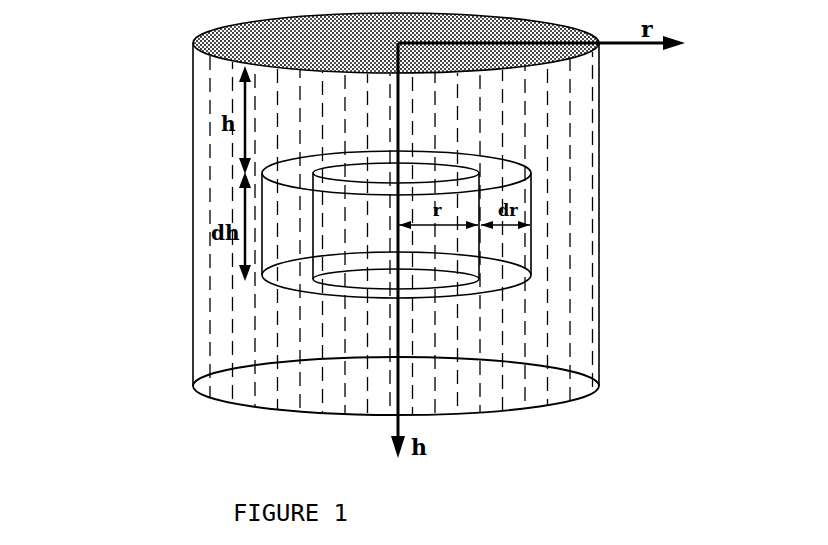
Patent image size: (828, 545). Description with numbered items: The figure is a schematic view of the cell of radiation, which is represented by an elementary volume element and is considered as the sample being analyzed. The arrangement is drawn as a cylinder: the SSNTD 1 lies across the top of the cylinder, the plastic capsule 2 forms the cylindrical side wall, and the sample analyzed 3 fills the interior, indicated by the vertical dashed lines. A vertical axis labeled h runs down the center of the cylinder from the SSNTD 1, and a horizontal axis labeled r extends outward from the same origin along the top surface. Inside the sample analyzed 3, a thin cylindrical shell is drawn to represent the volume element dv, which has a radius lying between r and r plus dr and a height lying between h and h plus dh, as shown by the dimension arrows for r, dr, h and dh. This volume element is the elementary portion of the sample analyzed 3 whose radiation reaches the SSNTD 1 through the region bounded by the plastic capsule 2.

The SSNTD 1 is at (220, 44).
The plastic capsule 2 is at (185, 215).
The sample analyzed 3 is at (237, 335).